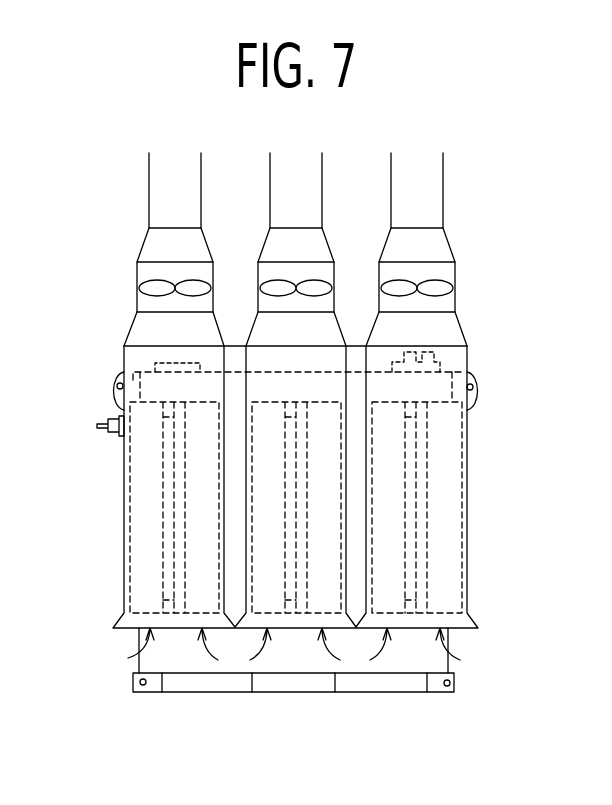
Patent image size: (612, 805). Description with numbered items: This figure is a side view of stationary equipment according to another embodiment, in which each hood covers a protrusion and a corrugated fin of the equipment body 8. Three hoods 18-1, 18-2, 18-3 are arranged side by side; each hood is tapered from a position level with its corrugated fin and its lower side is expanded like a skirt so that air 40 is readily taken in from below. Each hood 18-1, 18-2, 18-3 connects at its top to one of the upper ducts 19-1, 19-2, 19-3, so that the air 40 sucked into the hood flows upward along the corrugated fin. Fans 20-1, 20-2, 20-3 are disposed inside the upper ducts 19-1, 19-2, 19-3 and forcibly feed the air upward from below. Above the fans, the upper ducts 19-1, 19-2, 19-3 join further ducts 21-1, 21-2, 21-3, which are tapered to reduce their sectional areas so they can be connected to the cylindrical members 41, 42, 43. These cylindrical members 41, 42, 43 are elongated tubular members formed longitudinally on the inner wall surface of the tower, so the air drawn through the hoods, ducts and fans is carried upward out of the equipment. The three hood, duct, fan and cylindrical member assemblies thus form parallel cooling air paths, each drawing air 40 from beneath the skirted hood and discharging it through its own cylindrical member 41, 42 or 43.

The casing 8 is at (422, 388).
The hood 18-1 is at (470, 460).
The hood 18-2 is at (345, 512).
The hood 18-3 is at (123, 548).
The upper duct 19-1 is at (445, 303).
The upper duct 19-2 is at (280, 307).
The upper duct 19-3 is at (148, 303).
The fan 20-1 is at (437, 283).
The fan 20-2 is at (315, 283).
The fan 20-3 is at (153, 283).
The duct 21-1 is at (435, 246).
The duct 21-2 is at (275, 242).
The duct 21-3 is at (155, 245).
The air 40 is at (205, 655).
The cylindrical member 41 is at (430, 170).
The cylindrical member 42 is at (283, 168).
The cylindrical member 43 is at (162, 168).